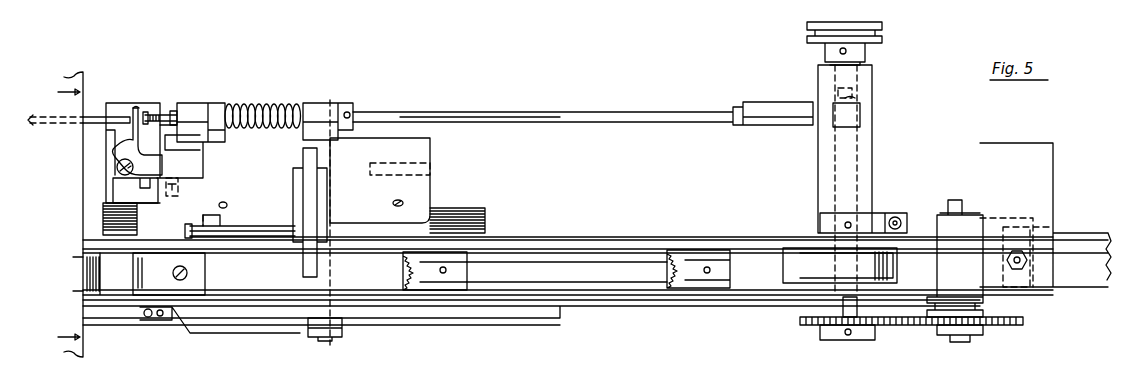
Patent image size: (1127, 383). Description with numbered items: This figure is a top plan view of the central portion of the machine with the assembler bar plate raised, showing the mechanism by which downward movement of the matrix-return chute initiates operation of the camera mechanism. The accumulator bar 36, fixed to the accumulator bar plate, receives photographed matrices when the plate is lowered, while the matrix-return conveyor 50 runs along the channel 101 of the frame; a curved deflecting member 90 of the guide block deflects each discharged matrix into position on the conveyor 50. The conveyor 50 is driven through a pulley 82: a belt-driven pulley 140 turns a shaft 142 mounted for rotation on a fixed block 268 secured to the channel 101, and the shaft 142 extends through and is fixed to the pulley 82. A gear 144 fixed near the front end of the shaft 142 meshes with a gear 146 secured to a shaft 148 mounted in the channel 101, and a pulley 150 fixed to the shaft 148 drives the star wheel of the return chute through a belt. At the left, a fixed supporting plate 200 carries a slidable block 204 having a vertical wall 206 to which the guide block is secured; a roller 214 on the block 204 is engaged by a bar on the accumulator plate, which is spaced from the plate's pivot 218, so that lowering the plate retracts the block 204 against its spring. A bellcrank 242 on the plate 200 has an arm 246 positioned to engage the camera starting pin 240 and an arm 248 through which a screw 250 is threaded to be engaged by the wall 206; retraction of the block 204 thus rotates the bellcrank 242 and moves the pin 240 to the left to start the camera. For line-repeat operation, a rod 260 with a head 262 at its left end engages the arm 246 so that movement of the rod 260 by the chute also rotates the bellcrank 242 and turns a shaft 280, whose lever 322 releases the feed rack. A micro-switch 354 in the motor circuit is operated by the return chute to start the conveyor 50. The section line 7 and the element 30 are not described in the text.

The section line 7 is at (61, 213).
The frame 30 is at (91, 348).
The accumulator bar 36 is at (487, 212).
The conveyor 50 is at (90, 271).
The pulley 82 is at (805, 268).
The curved deflecting member 90 is at (200, 270).
The channel 101 is at (636, 250).
The pulley 140 is at (885, 33).
The shaft 142 is at (845, 92).
The gear 144 is at (811, 326).
The gear 146 is at (1011, 327).
The shaft 148 is at (958, 340).
The pulley 150 is at (985, 303).
The fixed supporting plate 200 is at (113, 103).
The slidable block 204 is at (197, 152).
The vertical wall 206 is at (125, 248).
The roller 214 is at (222, 216).
The pivot 218 is at (432, 155).
The pin 240 is at (100, 117).
The bellcrank 242 is at (118, 148).
The arm 246 is at (136, 107).
The arm 248 is at (143, 176).
The screw 250 is at (179, 190).
The rod 260 is at (551, 112).
The head 262 is at (146, 112).
The fixed block 268 is at (868, 161).
The shaft 280 is at (332, 337).
The lever 322 is at (207, 328).
The micro-switch 354 is at (1025, 230).